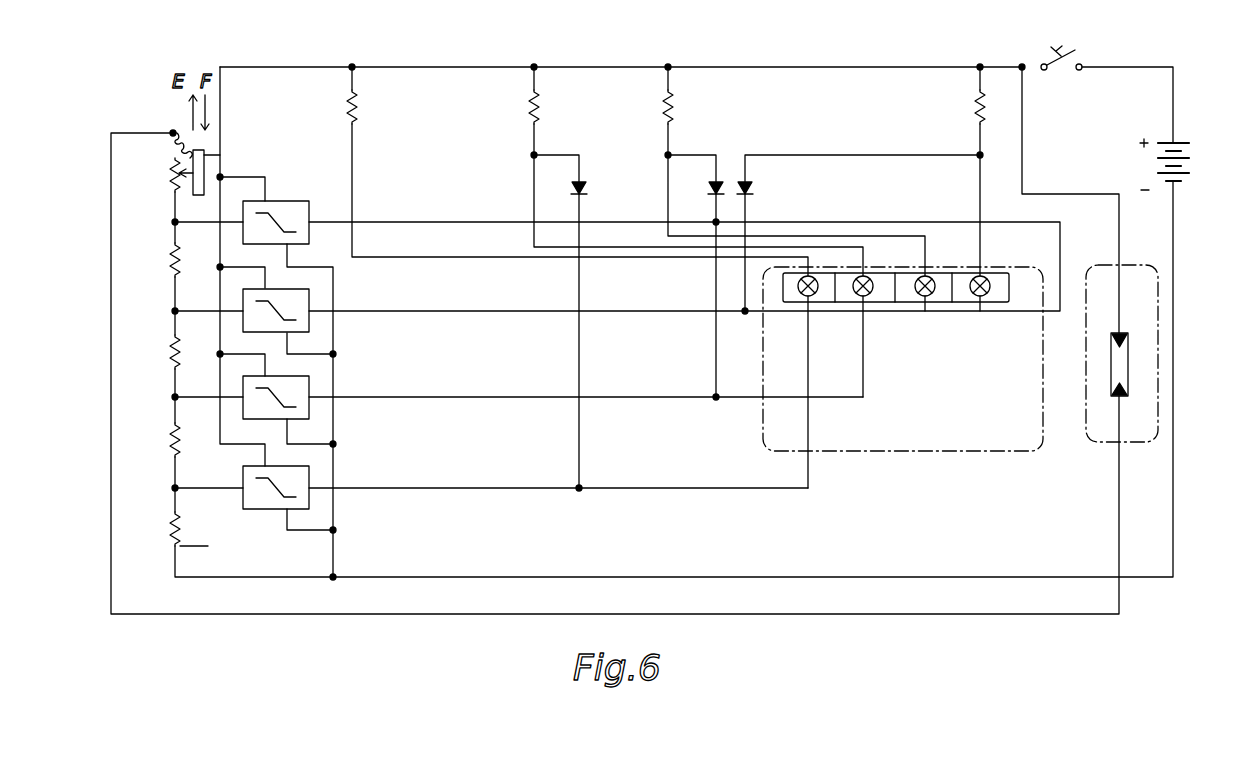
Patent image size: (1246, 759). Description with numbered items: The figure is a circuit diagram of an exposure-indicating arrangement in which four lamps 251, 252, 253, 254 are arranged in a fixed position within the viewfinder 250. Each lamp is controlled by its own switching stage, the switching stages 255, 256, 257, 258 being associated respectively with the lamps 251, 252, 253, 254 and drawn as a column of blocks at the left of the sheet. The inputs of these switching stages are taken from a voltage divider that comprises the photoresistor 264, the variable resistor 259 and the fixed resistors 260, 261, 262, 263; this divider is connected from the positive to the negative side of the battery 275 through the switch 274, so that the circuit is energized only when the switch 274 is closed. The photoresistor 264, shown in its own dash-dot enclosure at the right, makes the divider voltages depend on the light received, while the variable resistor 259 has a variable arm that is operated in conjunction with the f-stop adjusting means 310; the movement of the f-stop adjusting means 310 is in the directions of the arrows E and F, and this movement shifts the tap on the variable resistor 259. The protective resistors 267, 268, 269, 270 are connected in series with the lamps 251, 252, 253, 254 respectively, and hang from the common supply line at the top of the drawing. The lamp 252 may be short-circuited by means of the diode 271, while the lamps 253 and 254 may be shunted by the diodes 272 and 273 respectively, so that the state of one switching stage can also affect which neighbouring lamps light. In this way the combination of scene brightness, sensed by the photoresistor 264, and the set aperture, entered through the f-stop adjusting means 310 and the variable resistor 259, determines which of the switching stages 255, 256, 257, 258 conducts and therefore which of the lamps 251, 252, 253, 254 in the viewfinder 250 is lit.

The viewfinder 250 is at (918, 453).
The lamp 251 is at (808, 307).
The lamp 252 is at (864, 299).
The lamp 253 is at (924, 299).
The lamp 254 is at (980, 299).
The switching stage 255 is at (258, 509).
The switching stage 256 is at (302, 416).
The switching stage 257 is at (302, 322).
The switching stage 258 is at (296, 201).
The variable resistor 259 is at (170, 177).
The fixed resistor 260 is at (170, 262).
The fixed resistor 261 is at (170, 355).
The fixed resistor 262 is at (170, 449).
The fixed resistor 263 is at (170, 539).
The photoresistor 264 is at (1132, 372).
The protective resistor 267 is at (356, 115).
The protective resistor 268 is at (528, 113).
The protective resistor 269 is at (666, 113).
The protective resistor 270 is at (970, 113).
The diode 271 is at (578, 186).
The diode 272 is at (714, 186).
The diode 273 is at (751, 190).
The switch 274 is at (1080, 56).
The battery 275 is at (1154, 166).
The f-stop adjusting means 310 is at (214, 155).